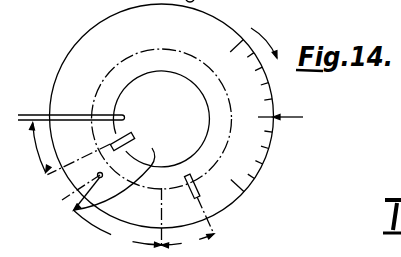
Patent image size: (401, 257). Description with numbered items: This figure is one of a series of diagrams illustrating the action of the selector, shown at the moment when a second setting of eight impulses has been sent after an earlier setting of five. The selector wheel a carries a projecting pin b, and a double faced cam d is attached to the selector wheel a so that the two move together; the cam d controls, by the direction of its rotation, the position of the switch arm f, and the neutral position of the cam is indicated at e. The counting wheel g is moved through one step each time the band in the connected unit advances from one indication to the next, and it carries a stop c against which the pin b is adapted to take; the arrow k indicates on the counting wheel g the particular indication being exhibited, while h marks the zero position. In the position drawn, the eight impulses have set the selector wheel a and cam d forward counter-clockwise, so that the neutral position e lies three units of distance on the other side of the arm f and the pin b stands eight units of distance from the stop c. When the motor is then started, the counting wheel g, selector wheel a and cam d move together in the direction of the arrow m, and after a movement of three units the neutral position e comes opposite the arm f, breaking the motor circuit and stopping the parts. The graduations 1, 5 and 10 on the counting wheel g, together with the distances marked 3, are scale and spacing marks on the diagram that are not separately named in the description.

The selector wheel a is at (233, 136).
The pin b is at (198, 192).
The stop c is at (97, 177).
The double faced cam d is at (75, 212).
The neutral position e is at (127, 128).
The switch arm f is at (37, 114).
The counting wheel g is at (218, 194).
The zero position h is at (232, 191).
The arrow k is at (303, 117).
The arrow m is at (269, 38).
The graduation 1 is at (235, 180).
The graduation 5 is at (174, 182).
The graduation 10 is at (228, 53).
The dimension 3 is at (122, 188).